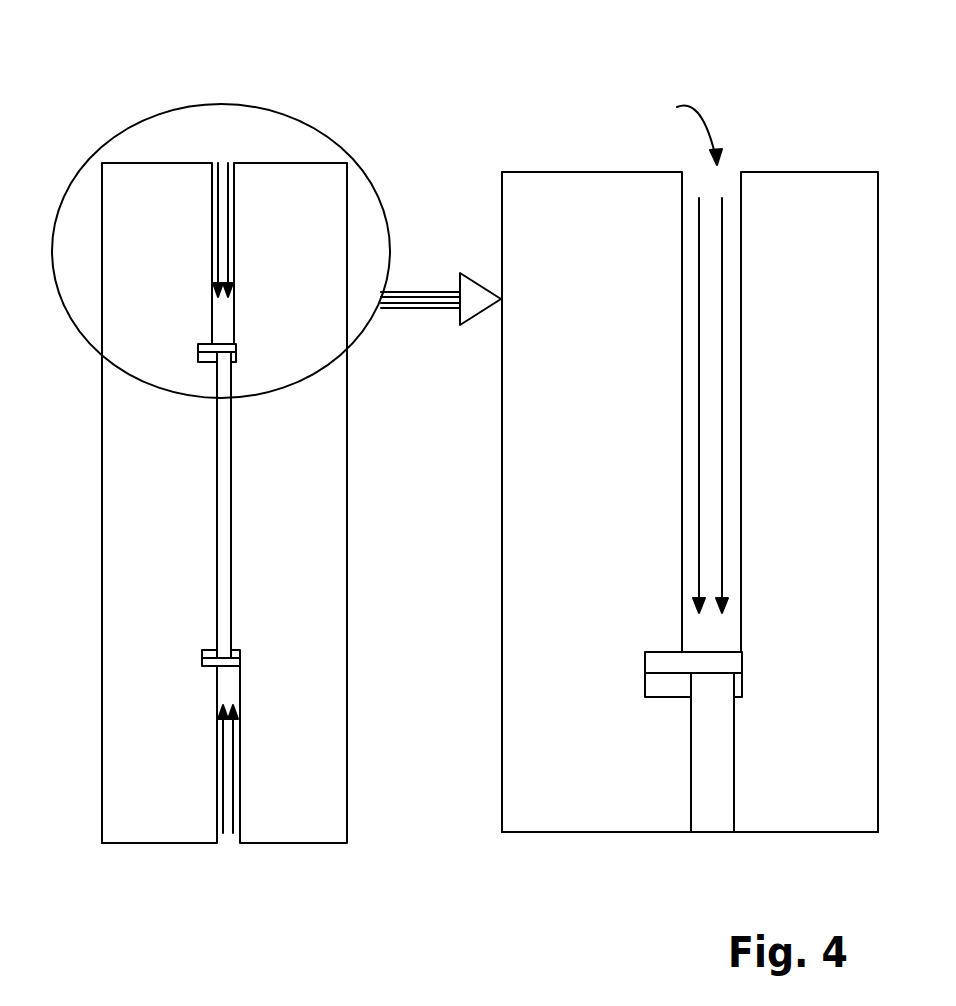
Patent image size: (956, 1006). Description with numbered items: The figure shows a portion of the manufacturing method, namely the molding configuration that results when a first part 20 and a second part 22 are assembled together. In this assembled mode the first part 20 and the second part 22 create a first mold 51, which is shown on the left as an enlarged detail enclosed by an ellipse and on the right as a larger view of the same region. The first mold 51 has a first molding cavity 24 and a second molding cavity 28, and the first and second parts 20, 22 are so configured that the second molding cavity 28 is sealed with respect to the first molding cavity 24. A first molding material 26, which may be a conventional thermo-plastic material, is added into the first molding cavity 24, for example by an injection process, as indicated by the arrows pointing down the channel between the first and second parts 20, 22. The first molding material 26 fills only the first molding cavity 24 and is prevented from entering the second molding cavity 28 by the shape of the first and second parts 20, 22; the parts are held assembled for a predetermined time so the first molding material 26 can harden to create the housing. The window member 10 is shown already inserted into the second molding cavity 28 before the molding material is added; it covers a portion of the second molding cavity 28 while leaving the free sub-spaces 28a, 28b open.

The first mold 51 is at (276, 88).
The first part 20 is at (502, 205).
The second part 22 is at (812, 172).
The first molding cavity 24 is at (727, 188).
The first molding material 26 is at (703, 173).
The second molding cavity 28 is at (647, 691).
The free sub-space 28a is at (663, 698).
The free sub-space 28b is at (745, 676).
The window member 10 is at (737, 755).